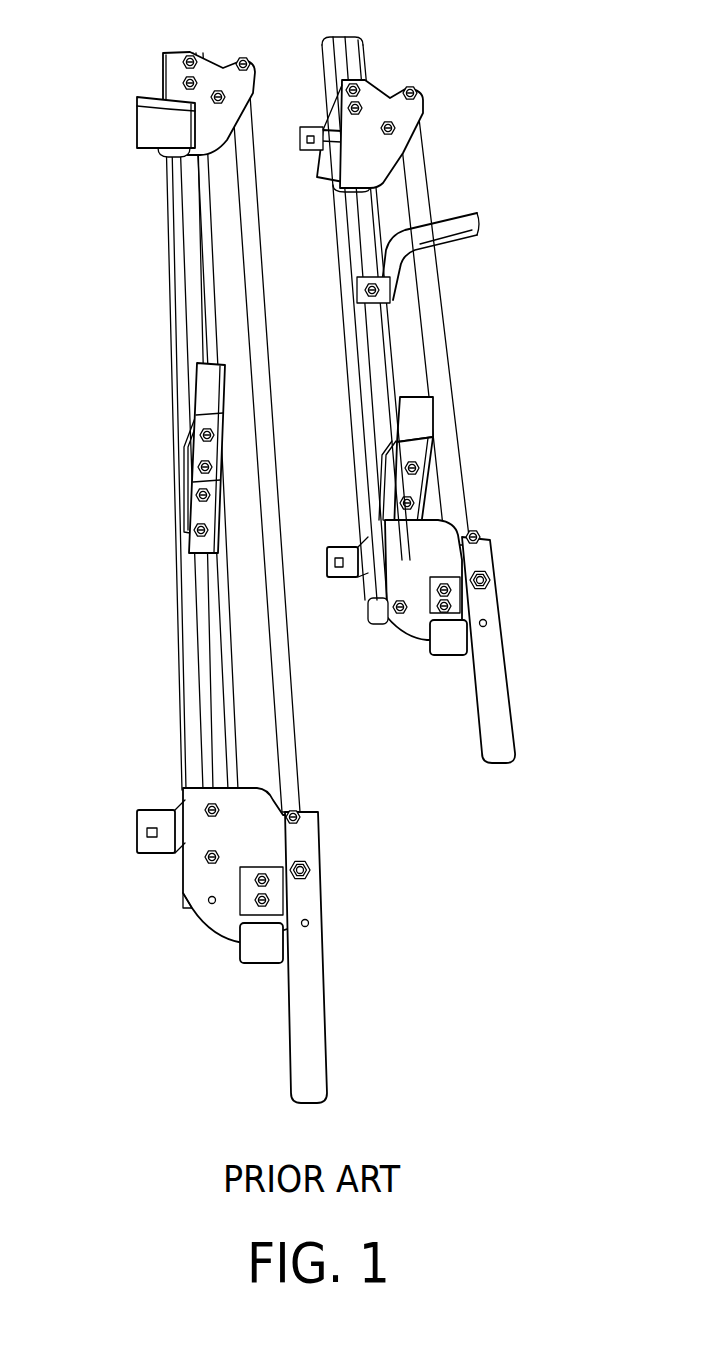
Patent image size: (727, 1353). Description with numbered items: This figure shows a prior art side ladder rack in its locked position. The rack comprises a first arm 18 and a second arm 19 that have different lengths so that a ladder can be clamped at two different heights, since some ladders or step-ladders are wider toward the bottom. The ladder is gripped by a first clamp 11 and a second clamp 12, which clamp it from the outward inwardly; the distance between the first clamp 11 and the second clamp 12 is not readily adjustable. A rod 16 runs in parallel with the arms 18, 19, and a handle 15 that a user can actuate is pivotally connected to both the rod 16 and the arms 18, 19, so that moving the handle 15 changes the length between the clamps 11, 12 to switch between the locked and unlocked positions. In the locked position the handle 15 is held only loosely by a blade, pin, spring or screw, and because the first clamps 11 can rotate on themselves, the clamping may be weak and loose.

The first clamp 11 is at (152, 118).
The second clamp 12 is at (207, 392).
The handle 15 is at (312, 1068).
The rod 16 is at (283, 752).
The first arm 18 is at (190, 605).
The second arm 19 is at (360, 423).